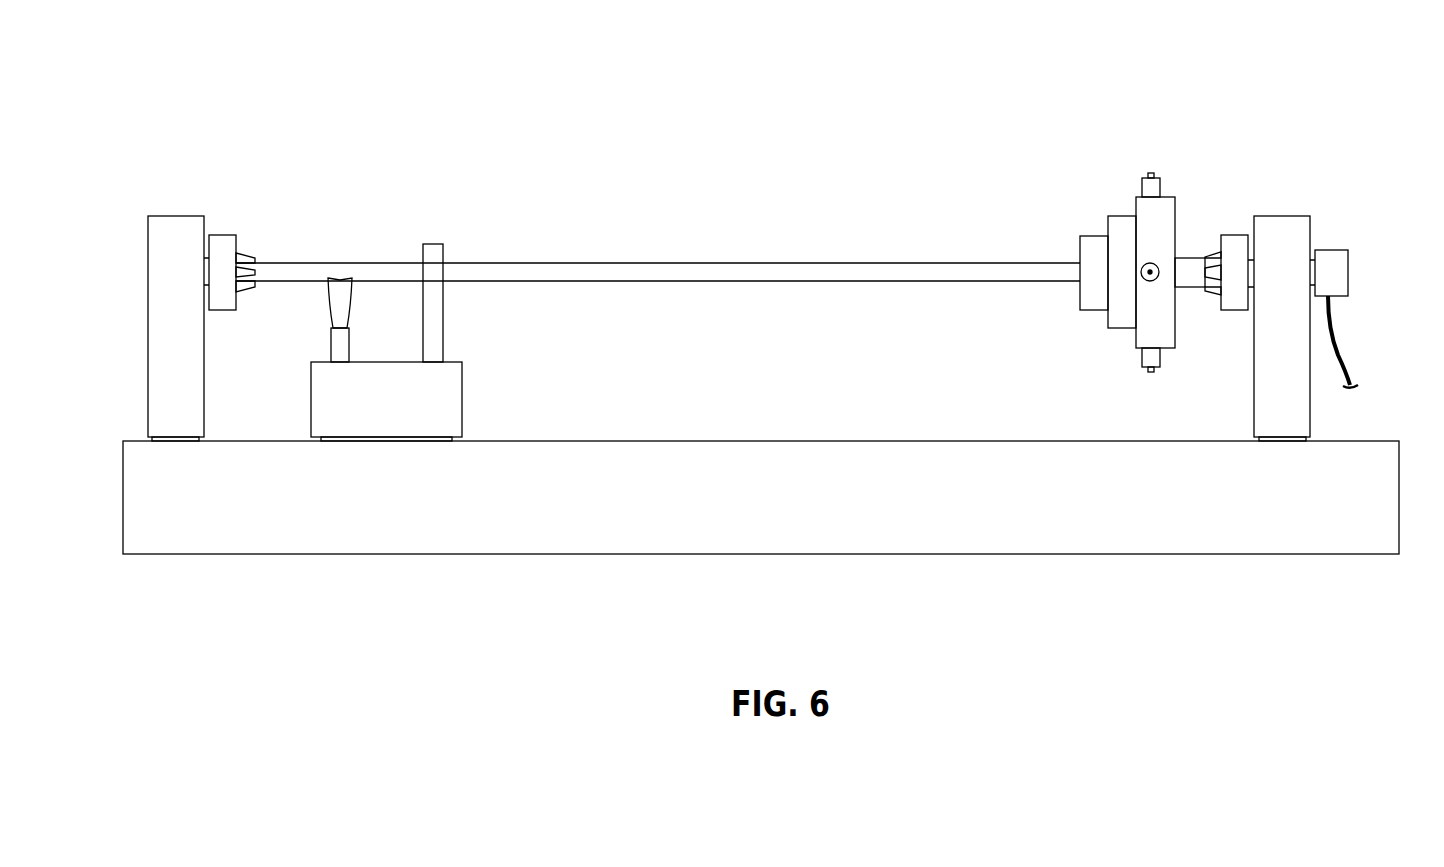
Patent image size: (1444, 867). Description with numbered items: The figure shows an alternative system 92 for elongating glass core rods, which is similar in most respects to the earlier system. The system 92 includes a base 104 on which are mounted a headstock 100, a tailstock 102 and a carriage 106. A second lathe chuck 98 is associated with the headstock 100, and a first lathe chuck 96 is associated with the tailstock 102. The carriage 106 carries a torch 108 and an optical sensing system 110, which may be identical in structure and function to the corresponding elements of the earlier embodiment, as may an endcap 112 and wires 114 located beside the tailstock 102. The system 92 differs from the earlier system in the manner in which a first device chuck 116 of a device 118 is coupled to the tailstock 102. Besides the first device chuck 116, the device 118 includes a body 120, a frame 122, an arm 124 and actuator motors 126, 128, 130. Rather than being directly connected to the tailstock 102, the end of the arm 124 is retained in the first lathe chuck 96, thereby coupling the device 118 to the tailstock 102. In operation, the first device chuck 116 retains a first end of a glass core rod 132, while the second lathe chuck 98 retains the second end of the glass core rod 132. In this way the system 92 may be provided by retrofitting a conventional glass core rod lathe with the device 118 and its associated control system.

The system 92 is at (667, 87).
The first lathe chuck 96 is at (1233, 235).
The second lathe chuck 98 is at (219, 235).
The headstock 100 is at (169, 216).
The tailstock 102 is at (1277, 216).
The base 104 is at (466, 556).
The carriage 106 is at (311, 402).
The torch 108 is at (331, 343).
The optical sensing system 110 is at (443, 343).
The endcap 112 is at (1349, 272).
The wires 114 is at (1341, 342).
The first device chuck 116 is at (1086, 311).
The device 118 is at (1135, 263).
The body 120 is at (1115, 328).
The frame 122 is at (1176, 336).
The arm 124 is at (1193, 257).
The actuator motor 126 is at (1150, 263).
The actuator motor 128 is at (1161, 191).
The actuator motor 130 is at (1143, 364).
The glass core rod 132 is at (603, 263).